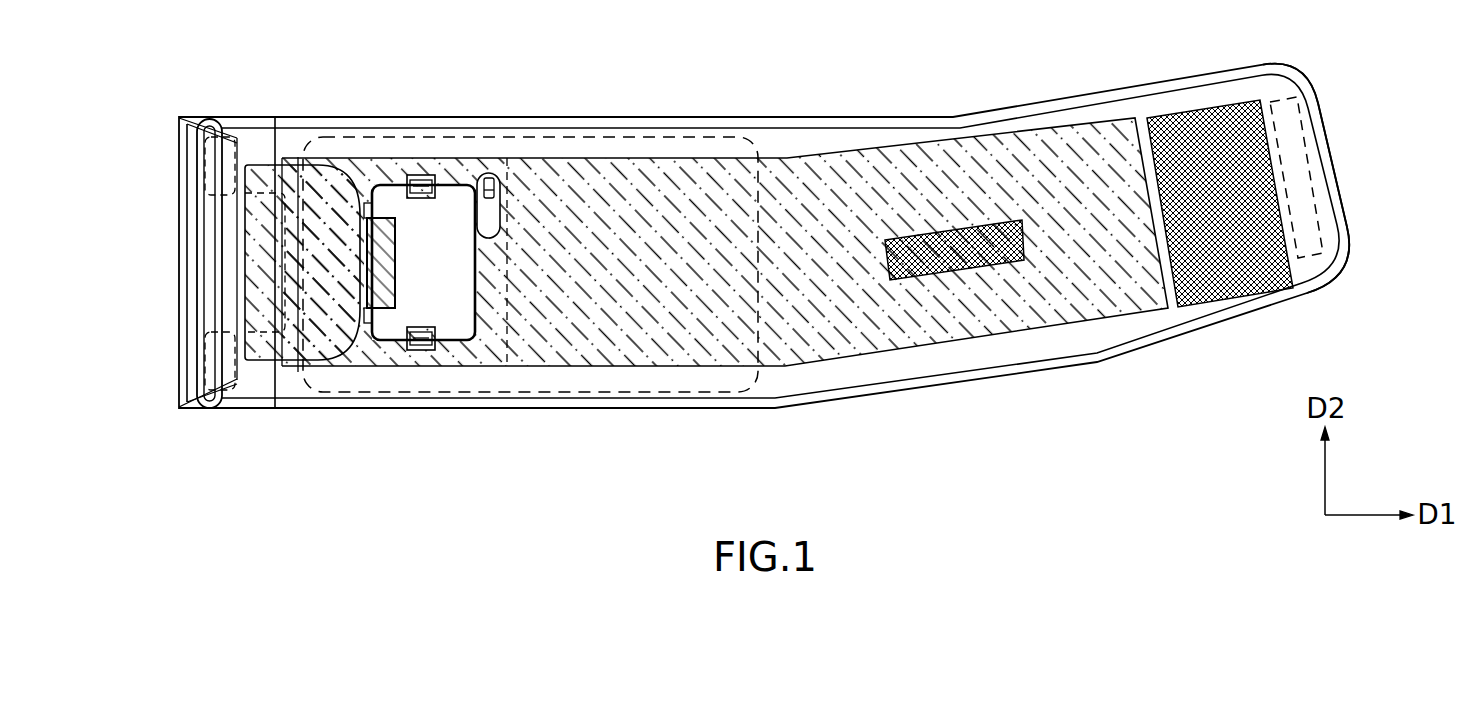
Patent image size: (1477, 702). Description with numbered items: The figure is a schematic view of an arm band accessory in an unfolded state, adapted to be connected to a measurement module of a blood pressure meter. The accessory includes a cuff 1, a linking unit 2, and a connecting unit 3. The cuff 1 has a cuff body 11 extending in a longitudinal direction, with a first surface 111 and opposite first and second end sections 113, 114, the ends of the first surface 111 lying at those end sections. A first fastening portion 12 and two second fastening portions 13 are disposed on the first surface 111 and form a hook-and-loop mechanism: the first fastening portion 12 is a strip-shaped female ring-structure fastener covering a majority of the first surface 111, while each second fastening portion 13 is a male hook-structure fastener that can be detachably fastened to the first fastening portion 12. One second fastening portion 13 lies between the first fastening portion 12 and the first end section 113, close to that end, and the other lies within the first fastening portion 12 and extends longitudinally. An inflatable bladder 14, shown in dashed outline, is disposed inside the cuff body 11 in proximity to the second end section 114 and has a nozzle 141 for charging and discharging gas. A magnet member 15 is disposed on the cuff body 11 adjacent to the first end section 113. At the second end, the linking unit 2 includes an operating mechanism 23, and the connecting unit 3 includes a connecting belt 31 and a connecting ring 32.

The cuff 1 is at (836, 403).
The cuff body 11 is at (902, 396).
The first surface 111 is at (785, 384).
The first end section 113 is at (1349, 230).
The second end section 114 is at (181, 370).
The connecting unit 3 is at (214, 412).
The first fastening portion 12 is at (851, 172).
The second fastening portion 13 is at (963, 256).
The inflatable bladder 14 is at (648, 137).
The nozzle 141 is at (488, 175).
The linking unit 2 is at (466, 376).
The operating mechanism 23 is at (395, 320).
The connecting belt 31 is at (262, 267).
The connecting ring 32 is at (200, 207).
The magnet member 15 is at (1306, 142).